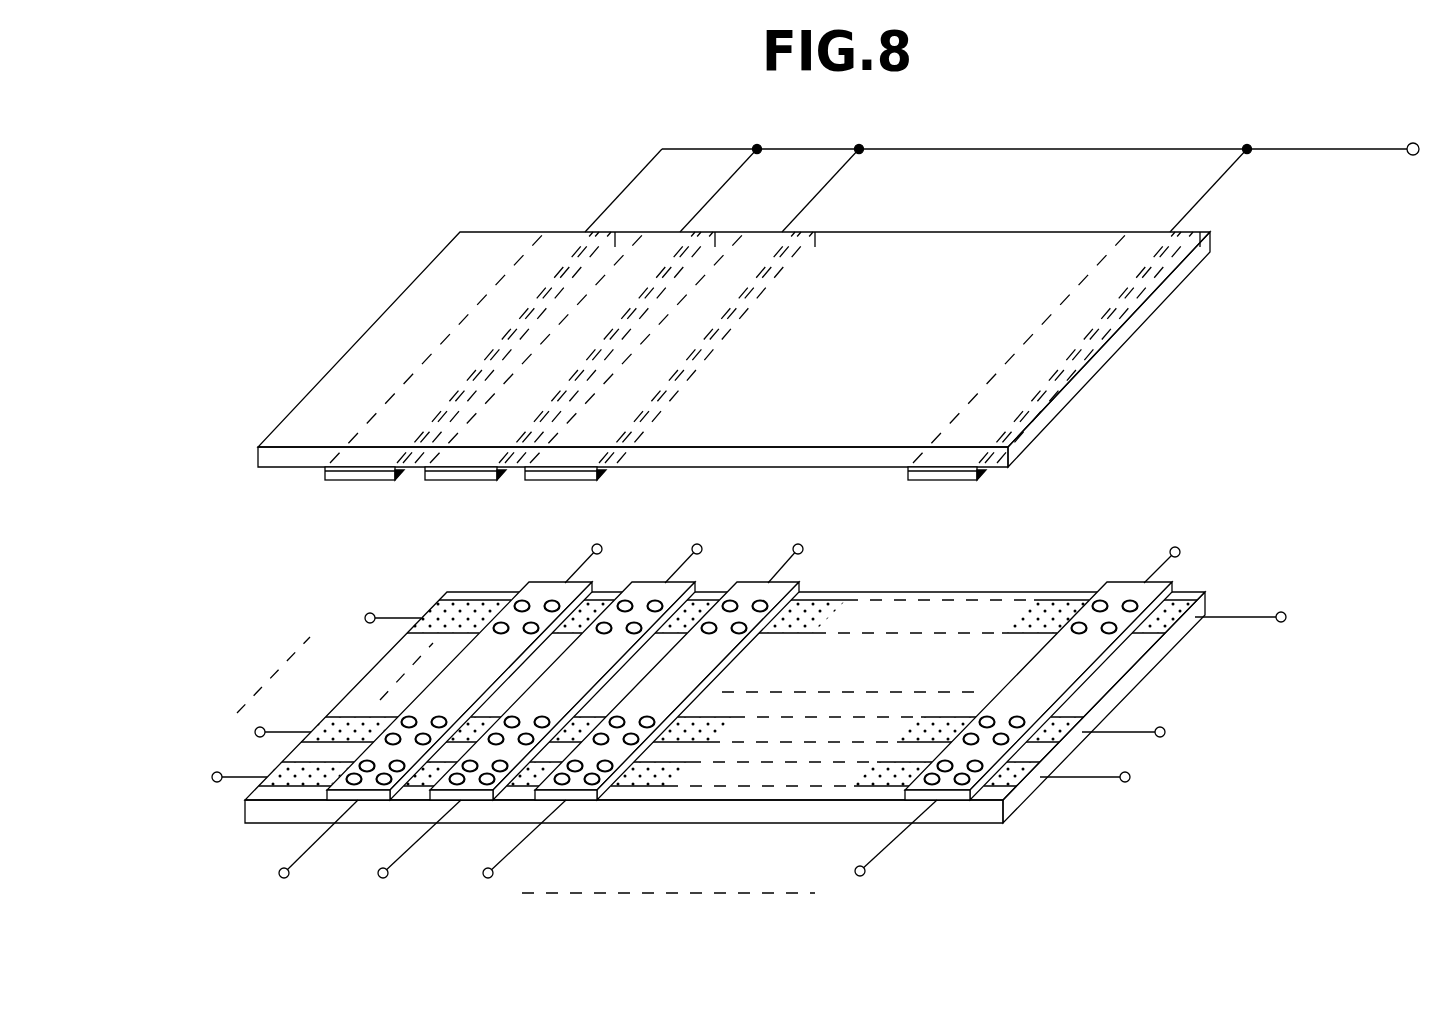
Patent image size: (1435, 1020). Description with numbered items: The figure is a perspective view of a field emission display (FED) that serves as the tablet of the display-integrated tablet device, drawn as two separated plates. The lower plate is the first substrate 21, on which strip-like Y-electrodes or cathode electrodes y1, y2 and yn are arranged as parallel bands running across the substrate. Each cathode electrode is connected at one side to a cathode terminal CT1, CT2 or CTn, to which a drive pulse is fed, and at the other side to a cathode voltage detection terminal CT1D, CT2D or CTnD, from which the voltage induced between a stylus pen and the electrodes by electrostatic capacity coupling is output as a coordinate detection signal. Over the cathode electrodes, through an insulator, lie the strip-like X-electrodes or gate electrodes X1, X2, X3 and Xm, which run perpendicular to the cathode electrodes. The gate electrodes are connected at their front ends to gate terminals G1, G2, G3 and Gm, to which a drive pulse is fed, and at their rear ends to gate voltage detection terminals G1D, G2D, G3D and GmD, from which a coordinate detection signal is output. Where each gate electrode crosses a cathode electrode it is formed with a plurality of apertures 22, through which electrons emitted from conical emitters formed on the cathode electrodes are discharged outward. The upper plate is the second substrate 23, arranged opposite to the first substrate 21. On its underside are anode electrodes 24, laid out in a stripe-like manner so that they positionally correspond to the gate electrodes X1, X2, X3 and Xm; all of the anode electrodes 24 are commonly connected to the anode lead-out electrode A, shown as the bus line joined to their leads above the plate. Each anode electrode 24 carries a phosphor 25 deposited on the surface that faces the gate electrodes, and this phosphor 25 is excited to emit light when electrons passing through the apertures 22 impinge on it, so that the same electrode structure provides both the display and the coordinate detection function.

The first substrate 21 is at (987, 824).
The apertures 22 is at (1103, 599).
The second substrate 23 is at (983, 232).
The anode electrodes 24 is at (330, 468).
The phosphor 25 is at (360, 481).
The anode lead-out electrode A is at (1004, 170).
The gate electrode X1 is at (370, 787).
The gate electrode X2 is at (470, 787).
The gate electrode X3 is at (577, 787).
The gate electrode Xm is at (1038, 696).
The cathode electrode y1 is at (263, 789).
The cathode electrode y2 is at (327, 735).
The cathode electrode yn is at (433, 612).
The gate terminal G1 is at (307, 860).
The gate terminal G2 is at (411, 860).
The gate terminal G3 is at (517, 860).
The gate terminal Gm is at (881, 858).
The gate voltage detection terminal G1D is at (616, 552).
The gate voltage detection terminal G2D is at (716, 552).
The gate voltage detection terminal G3D is at (818, 552).
The gate voltage detection terminal GmD is at (1201, 551).
The cathode terminal CT1 is at (208, 773).
The cathode terminal CT2 is at (249, 731).
The cathode terminal CTn is at (360, 616).
The cathode voltage detection terminal CT1D is at (1126, 779).
The cathode voltage detection terminal CT2D is at (1165, 735).
The cathode voltage detection terminal CTnD is at (1281, 618).